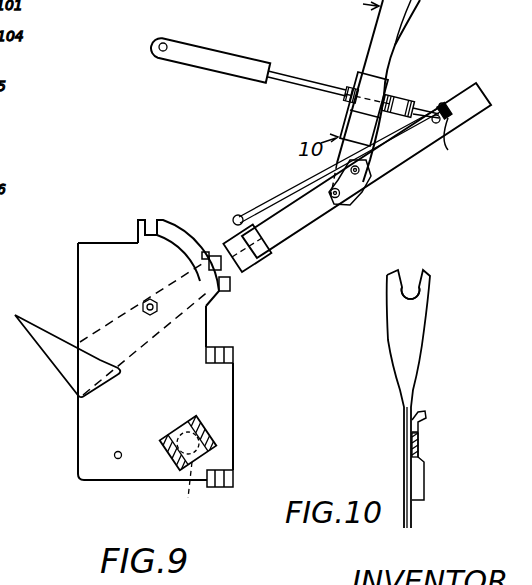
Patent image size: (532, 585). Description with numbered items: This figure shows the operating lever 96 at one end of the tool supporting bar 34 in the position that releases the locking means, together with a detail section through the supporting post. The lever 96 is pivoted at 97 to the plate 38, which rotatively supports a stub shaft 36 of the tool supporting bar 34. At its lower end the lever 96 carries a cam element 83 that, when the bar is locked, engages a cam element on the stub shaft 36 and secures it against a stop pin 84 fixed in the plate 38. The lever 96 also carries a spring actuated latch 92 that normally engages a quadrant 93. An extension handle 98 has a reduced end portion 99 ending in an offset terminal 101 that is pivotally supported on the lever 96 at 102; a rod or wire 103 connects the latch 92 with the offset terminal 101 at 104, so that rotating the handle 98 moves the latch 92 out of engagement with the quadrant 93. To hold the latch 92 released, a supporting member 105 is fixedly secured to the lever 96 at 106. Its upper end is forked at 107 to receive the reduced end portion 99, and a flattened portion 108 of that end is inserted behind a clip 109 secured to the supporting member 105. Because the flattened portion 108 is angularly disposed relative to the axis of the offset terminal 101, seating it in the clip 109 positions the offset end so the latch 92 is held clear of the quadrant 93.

In FIG. 9, the tool supporting bar 34 is at (226, 454).
In FIG. 9, the stub shaft 36 is at (180, 490).
In FIG. 9, the plate 38 is at (85, 447).
In FIG. 9, the cam element 83 is at (63, 353).
In FIG. 9, the stop pin 84 is at (115, 459).
In FIG. 9, the spring actuated latch 92 is at (253, 258).
In FIG. 9, the quadrant 93 is at (170, 225).
In FIG. 9, the lever 96 is at (302, 222).
In FIG. 9, the pivot 97 is at (142, 304).
In FIG. 9, the extension handle 98 is at (198, 48).
In FIG. 9, the reduced end portion 99 is at (287, 72).
In FIG. 9, the offset terminal 101 is at (444, 104).
In FIG. 9, the pivotal support 102 is at (448, 118).
In FIG. 9, the rod or wire 103 is at (280, 197).
In FIG. 9, the connection 104 is at (447, 112).
In FIG. 9, the supporting member 105 is at (392, 58).
In FIG. 10, the supporting member 105 is at (410, 512).
In FIG. 9, the securing point 106 is at (366, 187).
In FIG. 10, the forked upper end 107 is at (407, 290).
In FIG. 9, the flattened portion 108 is at (397, 104).
In FIG. 10, the flattened portion 108 is at (419, 445).
In FIG. 9, the clip 109 is at (375, 82).
In FIG. 10, the clip 109 is at (427, 418).